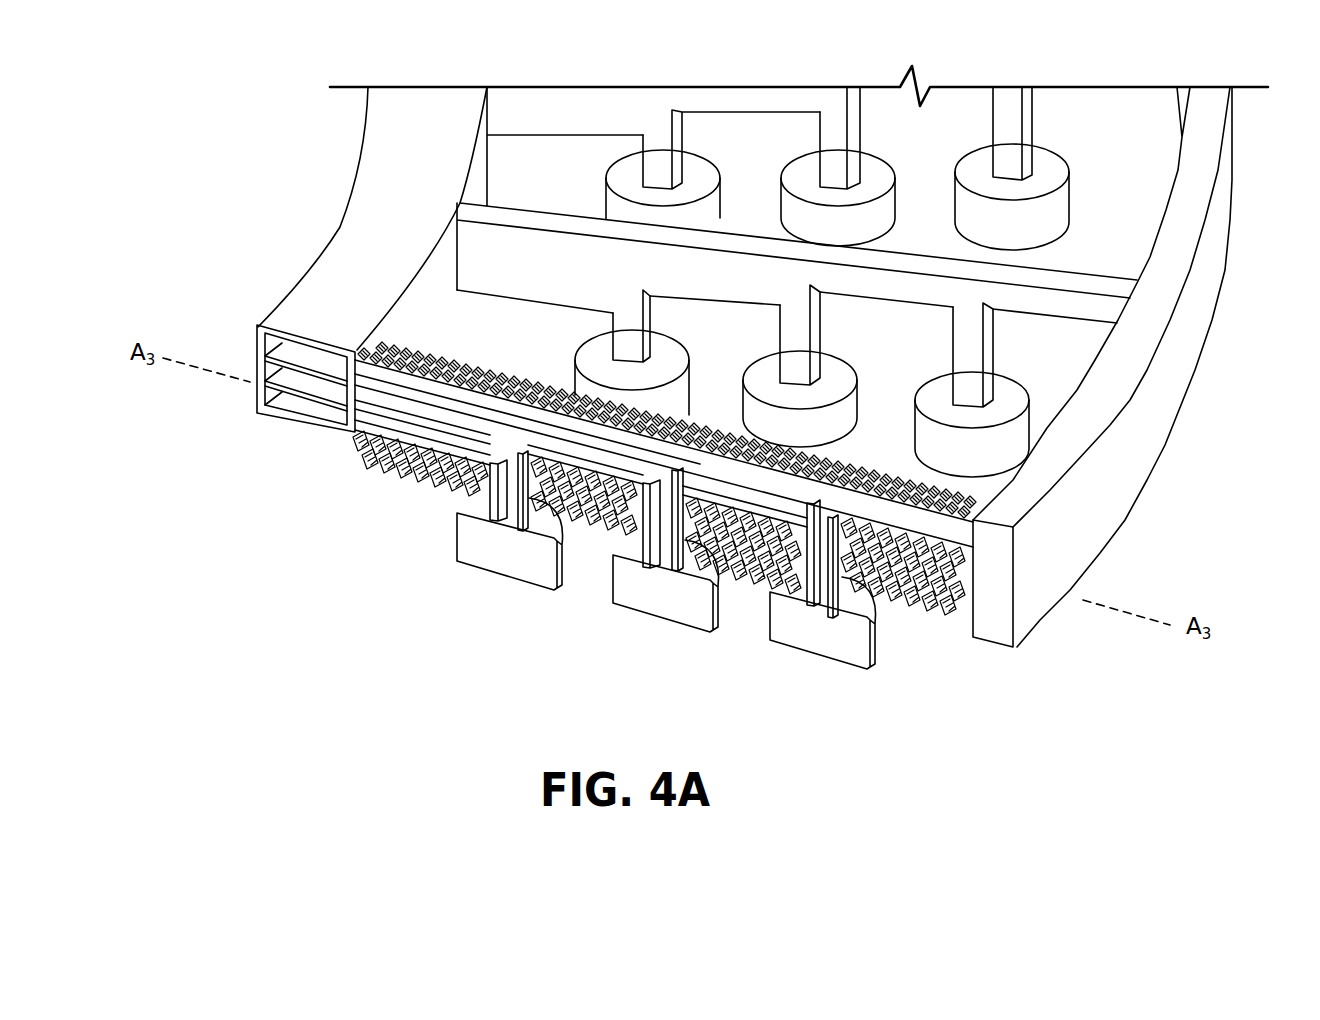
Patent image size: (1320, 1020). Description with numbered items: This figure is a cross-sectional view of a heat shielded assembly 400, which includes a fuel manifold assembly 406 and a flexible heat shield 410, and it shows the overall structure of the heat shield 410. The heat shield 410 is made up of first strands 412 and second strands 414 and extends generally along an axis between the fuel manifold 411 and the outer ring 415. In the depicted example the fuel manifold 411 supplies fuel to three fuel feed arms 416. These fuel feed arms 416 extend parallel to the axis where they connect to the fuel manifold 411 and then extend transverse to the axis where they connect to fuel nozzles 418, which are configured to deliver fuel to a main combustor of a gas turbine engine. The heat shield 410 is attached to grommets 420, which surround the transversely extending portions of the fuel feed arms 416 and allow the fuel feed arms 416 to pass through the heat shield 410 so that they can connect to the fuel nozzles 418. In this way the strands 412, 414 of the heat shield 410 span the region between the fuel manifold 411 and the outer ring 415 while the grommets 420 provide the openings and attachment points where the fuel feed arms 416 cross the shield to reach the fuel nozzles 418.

The heat shielded assembly 400 is at (246, 189).
The fuel manifold assembly 406 is at (303, 455).
The heat shield 410 is at (426, 492).
The fuel manifold 411 is at (310, 320).
The first strands 412 is at (445, 352).
The second strands 414 is at (516, 360).
The outer ring 415 is at (1036, 559).
The fuel feed arms 416 is at (837, 600).
The fuel nozzles 418 is at (467, 560).
The grommets 420 is at (470, 495).